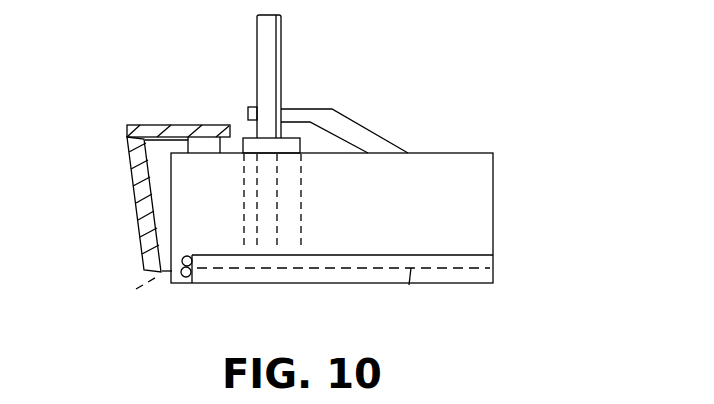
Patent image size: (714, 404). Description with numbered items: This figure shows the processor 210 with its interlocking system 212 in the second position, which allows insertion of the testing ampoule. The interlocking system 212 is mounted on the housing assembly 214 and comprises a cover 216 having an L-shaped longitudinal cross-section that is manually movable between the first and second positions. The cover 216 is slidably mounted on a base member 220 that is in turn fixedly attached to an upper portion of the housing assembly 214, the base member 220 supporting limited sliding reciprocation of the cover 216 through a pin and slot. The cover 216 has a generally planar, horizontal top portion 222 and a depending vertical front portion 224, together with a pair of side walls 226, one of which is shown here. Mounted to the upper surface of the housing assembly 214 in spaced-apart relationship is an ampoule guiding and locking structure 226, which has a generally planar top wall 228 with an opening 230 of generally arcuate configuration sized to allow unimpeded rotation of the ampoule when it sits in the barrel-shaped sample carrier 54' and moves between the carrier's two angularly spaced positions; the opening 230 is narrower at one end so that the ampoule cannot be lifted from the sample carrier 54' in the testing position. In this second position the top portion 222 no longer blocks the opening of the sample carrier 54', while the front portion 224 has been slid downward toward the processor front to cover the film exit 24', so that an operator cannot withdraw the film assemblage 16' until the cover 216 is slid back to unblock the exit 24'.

The processor 210 is at (514, 205).
The interlocking system 212 is at (169, 110).
The housing assembly 214 is at (427, 153).
The cover 216 is at (130, 145).
The base member 220 is at (213, 148).
The top portion 222 is at (156, 130).
The front portion 224 is at (134, 190).
The ampoule guiding and locking structure 226 is at (157, 158).
The top wall 228 is at (312, 108).
The opening 230 is at (284, 112).
The sample carrier 54' is at (310, 194).
The film exit 24' is at (221, 290).
The film assemblage 16' is at (435, 296).